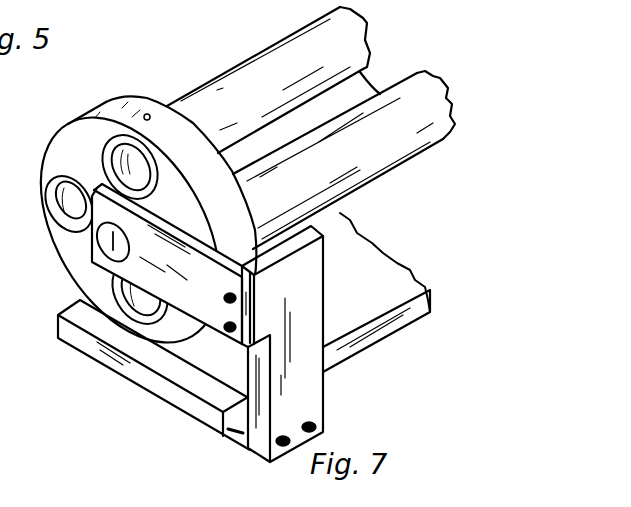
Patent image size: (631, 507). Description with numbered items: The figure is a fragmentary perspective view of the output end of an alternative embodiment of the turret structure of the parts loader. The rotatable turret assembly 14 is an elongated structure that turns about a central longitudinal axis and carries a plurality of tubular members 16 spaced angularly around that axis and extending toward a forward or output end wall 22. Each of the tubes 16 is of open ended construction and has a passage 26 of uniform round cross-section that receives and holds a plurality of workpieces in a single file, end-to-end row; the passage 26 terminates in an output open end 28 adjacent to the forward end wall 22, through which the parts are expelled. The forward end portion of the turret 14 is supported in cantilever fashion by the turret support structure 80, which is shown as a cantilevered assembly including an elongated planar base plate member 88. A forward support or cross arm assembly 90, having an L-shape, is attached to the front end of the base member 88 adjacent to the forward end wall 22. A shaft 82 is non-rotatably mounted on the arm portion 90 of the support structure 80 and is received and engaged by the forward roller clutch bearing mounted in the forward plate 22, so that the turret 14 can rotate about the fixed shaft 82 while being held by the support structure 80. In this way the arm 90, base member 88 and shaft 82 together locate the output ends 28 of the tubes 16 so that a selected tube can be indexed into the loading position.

The rotatable turret assembly 14 is at (85, 110).
The tubular members 16 is at (367, 35).
The forward end wall 22 is at (74, 279).
The passage 26 is at (0, 383).
The output open end 28 is at (66, 210).
The turret support structure 80 is at (418, 325).
The shaft 82 is at (98, 238).
The base plate member 88 is at (360, 348).
The forward support or cross arm assembly 90 is at (212, 340).